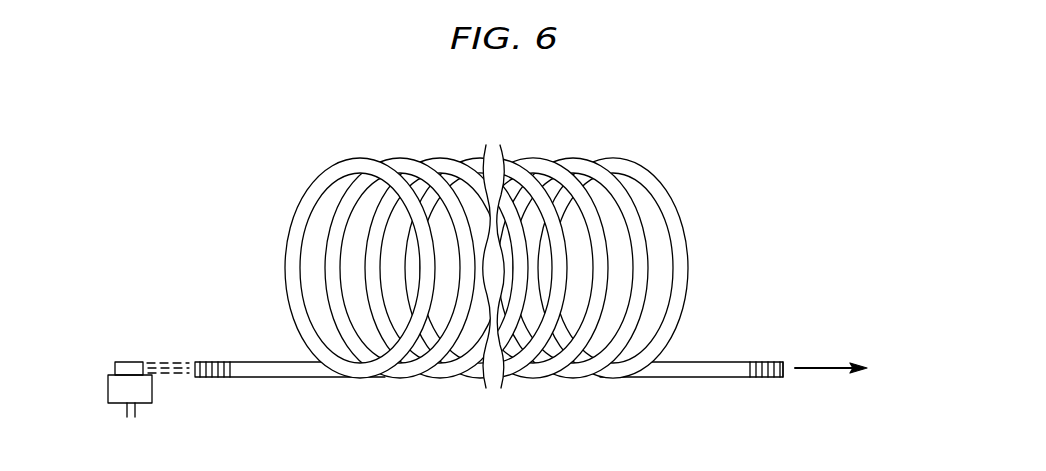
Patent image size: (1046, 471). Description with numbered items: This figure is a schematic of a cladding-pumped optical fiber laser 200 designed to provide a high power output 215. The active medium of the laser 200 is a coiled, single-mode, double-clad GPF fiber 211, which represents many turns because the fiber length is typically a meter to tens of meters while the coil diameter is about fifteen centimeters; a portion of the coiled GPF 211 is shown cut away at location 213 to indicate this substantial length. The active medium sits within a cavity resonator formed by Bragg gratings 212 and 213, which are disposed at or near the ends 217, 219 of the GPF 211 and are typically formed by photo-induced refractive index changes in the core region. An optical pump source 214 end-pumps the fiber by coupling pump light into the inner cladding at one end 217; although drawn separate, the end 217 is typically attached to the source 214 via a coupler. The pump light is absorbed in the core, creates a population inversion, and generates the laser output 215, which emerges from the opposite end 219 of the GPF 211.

The laser 200 is at (695, 163).
The coiled, single-mode, double-clad GPF fiber 211 is at (303, 201).
The Bragg grating 212 is at (212, 361).
The Bragg grating 213 is at (762, 361).
The optical pump source 214 is at (131, 362).
The high power output 215 is at (836, 368).
The end 217 is at (194, 369).
The end 219 is at (784, 377).